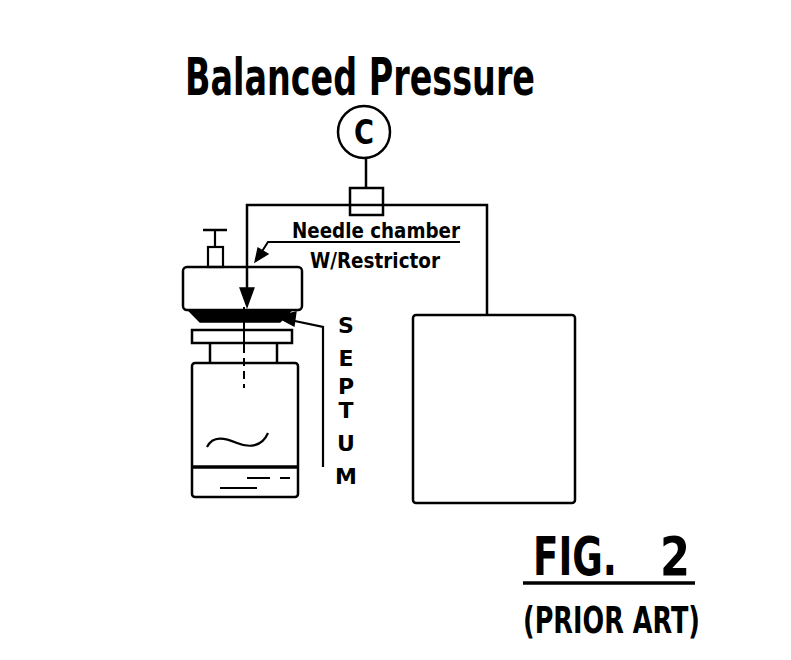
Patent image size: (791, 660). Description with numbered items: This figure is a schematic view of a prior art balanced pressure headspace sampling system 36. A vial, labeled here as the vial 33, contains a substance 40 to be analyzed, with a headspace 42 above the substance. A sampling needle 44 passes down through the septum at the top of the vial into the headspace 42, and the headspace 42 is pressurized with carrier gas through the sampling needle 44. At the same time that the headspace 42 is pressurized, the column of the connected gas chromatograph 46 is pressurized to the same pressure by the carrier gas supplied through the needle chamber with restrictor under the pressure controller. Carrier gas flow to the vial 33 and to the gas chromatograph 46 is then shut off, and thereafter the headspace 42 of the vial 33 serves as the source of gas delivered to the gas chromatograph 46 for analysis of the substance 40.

The headspace sampling system 36 is at (645, 288).
The sample vial 33 is at (192, 437).
The sampling needle 44 is at (243, 388).
The headspace 42 is at (237, 426).
The substance 40 is at (297, 478).
The gas chromatograph 46 is at (553, 373).